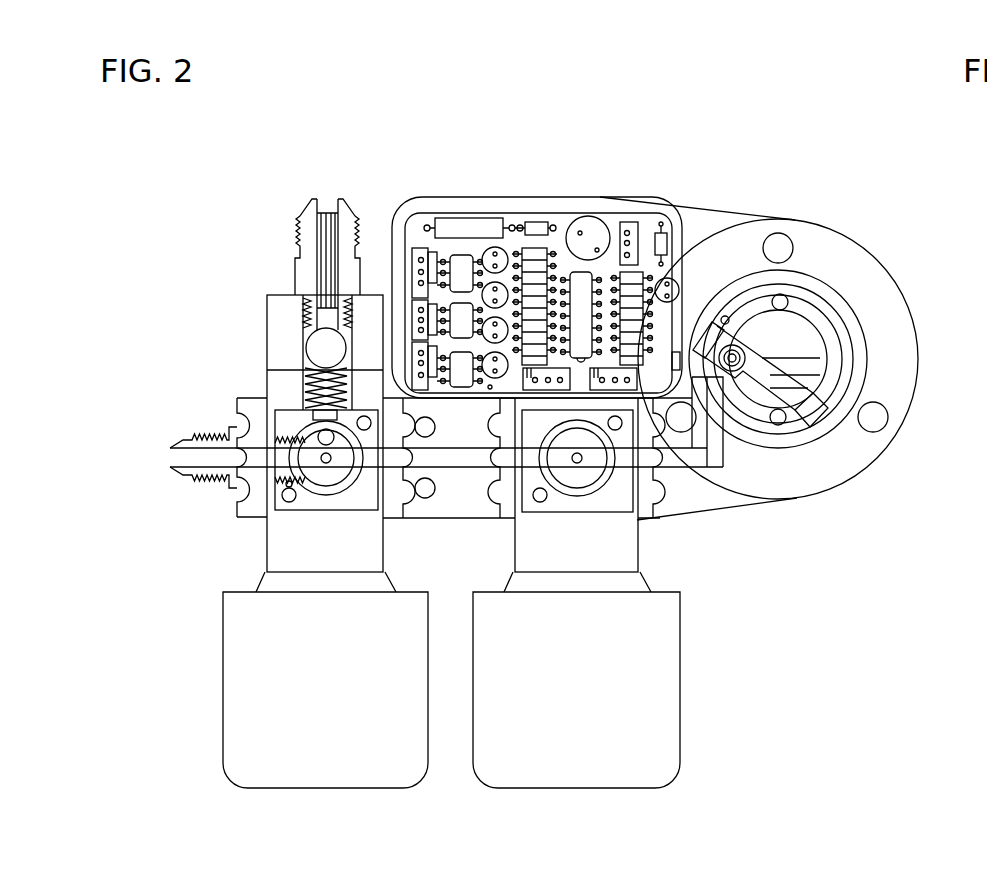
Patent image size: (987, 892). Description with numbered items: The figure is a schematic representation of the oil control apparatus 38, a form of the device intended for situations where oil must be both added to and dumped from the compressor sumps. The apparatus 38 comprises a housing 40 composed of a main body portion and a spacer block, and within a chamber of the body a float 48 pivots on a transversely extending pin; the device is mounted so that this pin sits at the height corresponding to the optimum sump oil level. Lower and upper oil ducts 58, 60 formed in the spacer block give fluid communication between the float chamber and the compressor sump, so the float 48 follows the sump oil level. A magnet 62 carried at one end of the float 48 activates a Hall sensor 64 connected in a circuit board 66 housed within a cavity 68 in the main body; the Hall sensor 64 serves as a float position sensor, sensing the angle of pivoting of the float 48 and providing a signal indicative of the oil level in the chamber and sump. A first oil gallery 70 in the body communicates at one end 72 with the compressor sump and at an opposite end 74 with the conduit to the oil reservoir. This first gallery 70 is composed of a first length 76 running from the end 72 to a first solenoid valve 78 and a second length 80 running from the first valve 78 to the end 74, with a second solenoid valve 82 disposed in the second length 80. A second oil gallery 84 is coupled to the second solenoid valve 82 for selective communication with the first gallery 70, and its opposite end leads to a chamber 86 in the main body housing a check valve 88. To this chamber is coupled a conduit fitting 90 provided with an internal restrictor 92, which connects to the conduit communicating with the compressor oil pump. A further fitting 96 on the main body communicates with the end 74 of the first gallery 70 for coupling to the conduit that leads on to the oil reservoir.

The apparatus 38 is at (641, 147).
The housing 40 is at (748, 200).
The float 48 is at (757, 313).
The lower oil duct 58 is at (782, 427).
The upper oil duct 60 is at (795, 283).
The magnet 62 is at (730, 308).
The Hall sensor 64 is at (672, 338).
The circuit board 66 is at (567, 222).
The cavity 68 is at (417, 220).
The first oil gallery 70 is at (702, 494).
The end 72 is at (744, 357).
The opposite end 74 is at (266, 468).
The first length 76 is at (673, 478).
The first solenoid valve 78 is at (516, 525).
The second length 80 is at (398, 472).
The second solenoid valve 82 is at (266, 538).
The second oil gallery 84 is at (307, 414).
The chamber 86 is at (315, 364).
The check valve 88 is at (323, 338).
The conduit fitting 90 is at (351, 209).
The internal restrictor 92 is at (327, 214).
The fitting 96 is at (192, 433).